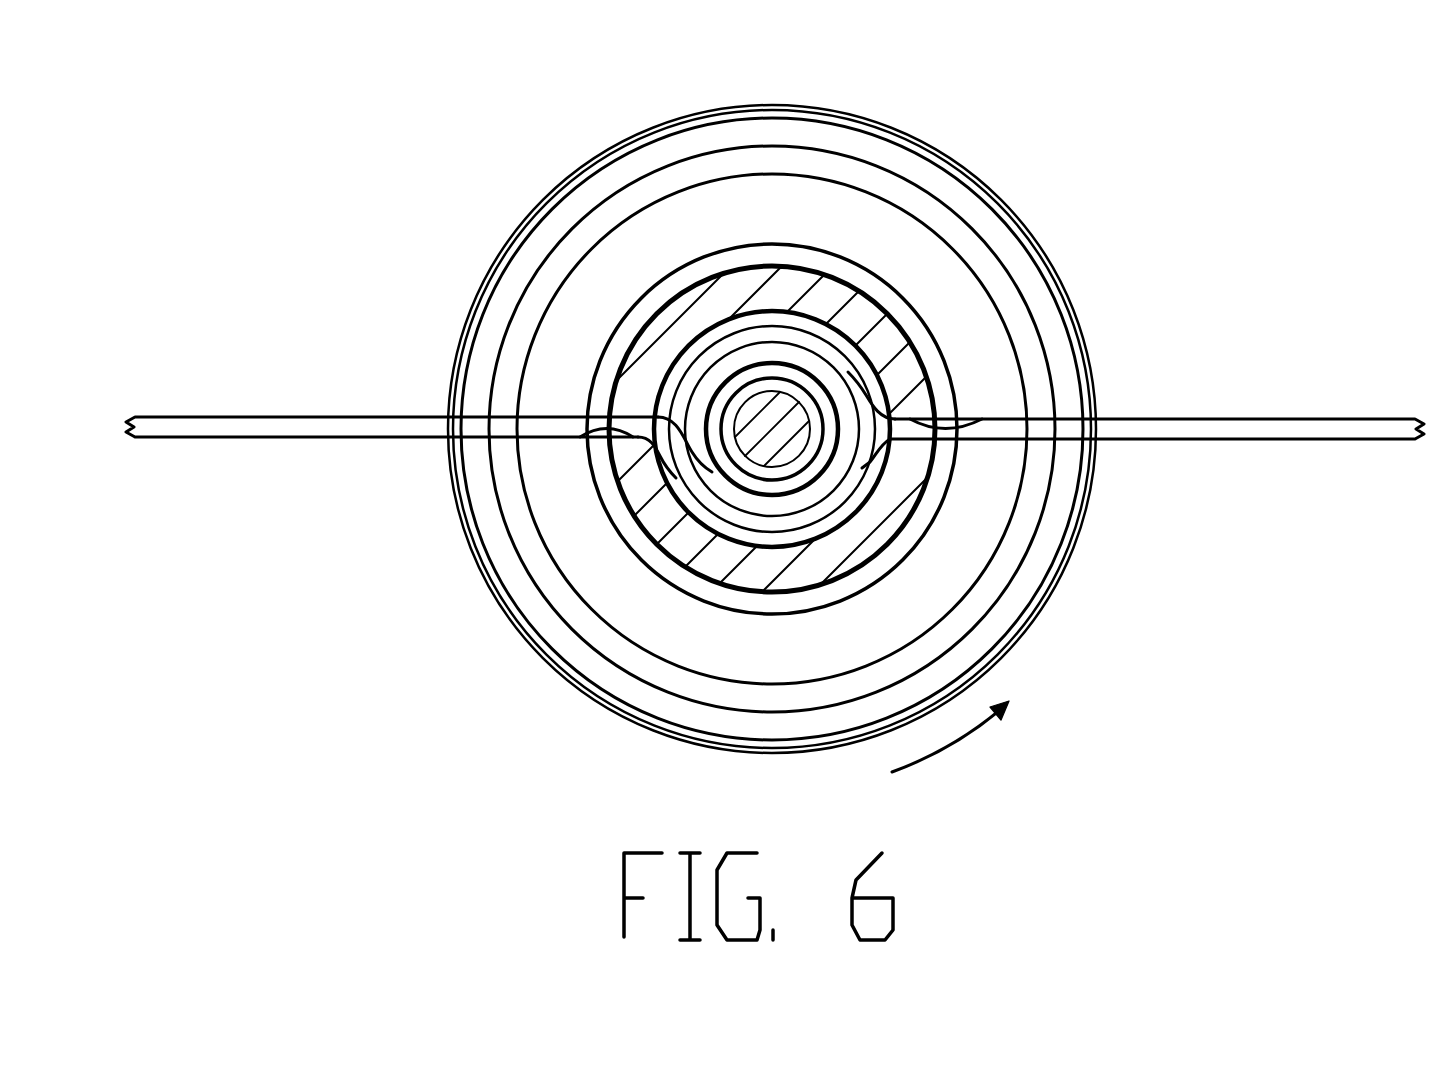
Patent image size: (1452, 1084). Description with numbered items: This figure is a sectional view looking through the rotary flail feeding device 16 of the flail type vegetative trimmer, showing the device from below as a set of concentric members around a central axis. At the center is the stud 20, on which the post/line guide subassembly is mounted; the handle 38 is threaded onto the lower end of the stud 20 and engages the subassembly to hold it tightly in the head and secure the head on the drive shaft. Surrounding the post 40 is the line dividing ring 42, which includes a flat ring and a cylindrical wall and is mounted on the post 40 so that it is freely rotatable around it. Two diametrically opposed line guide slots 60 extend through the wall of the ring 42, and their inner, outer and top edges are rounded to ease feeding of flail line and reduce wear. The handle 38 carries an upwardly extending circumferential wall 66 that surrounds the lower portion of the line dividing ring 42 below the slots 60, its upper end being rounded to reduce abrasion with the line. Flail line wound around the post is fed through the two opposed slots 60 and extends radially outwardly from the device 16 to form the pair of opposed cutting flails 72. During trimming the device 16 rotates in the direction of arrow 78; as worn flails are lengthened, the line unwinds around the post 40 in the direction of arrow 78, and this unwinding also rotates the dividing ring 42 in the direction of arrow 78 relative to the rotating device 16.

The rotary flail feeding device 16 is at (496, 187).
The stud 20 is at (662, 550).
The handle 38 is at (1007, 657).
The post 40 is at (830, 480).
The line dividing ring 42 is at (850, 318).
The line guide slots 60 is at (645, 428).
The circumferential wall 66 is at (760, 615).
The cutting flails 72 is at (210, 415).
The arrow 78 is at (948, 752).